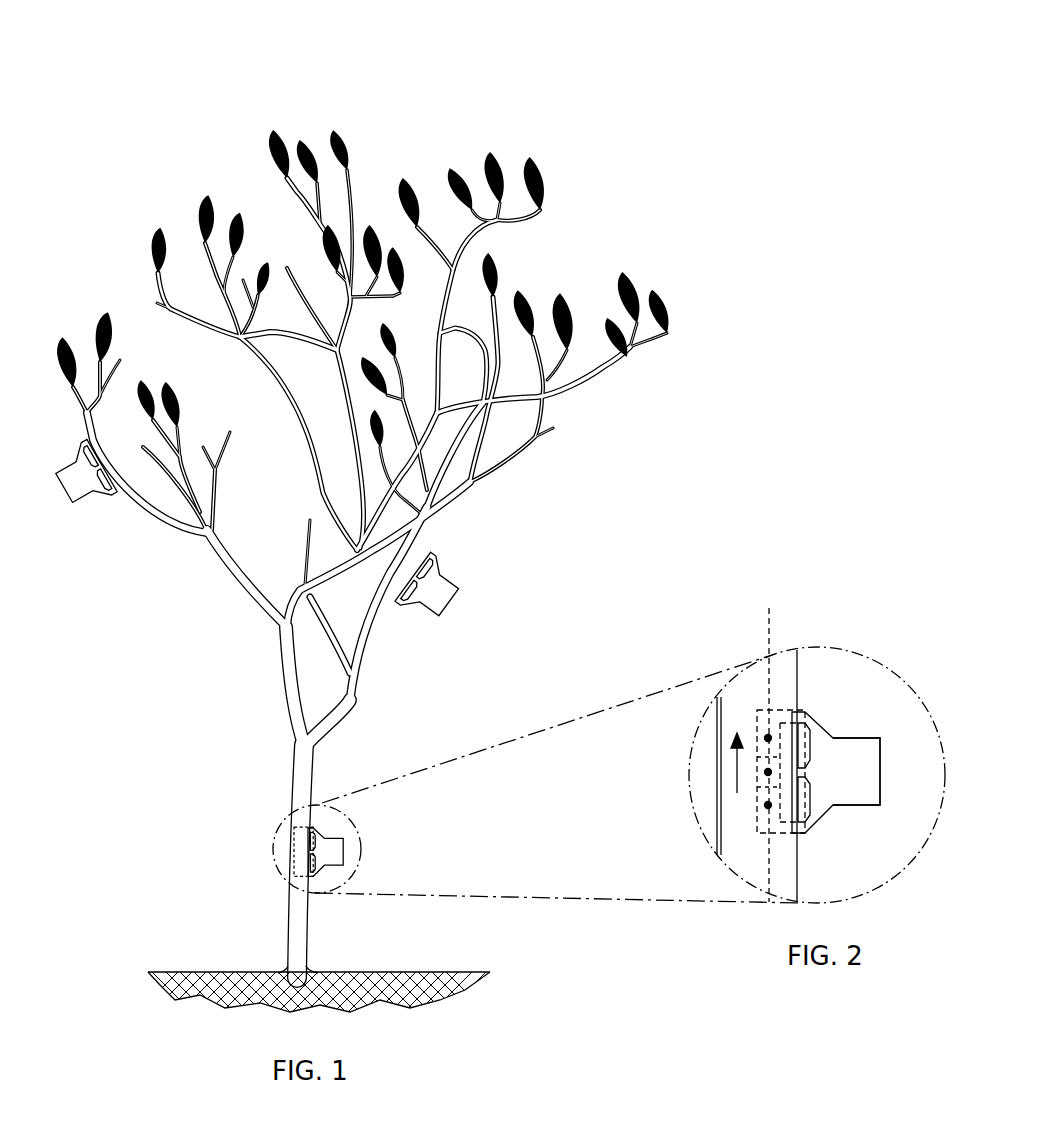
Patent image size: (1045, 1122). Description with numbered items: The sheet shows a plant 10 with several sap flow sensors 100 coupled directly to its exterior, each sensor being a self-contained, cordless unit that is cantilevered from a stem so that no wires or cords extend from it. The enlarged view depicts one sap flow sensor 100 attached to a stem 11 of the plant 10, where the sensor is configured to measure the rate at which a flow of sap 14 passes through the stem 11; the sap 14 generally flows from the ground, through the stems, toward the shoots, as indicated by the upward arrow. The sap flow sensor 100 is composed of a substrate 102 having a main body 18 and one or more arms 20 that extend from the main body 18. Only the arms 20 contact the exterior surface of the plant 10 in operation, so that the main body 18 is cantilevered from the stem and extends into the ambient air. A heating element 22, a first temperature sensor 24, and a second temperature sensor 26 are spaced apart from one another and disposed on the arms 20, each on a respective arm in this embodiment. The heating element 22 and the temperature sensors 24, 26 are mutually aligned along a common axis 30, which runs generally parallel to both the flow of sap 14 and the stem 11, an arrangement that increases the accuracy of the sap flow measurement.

In FIG. 1, the plant 10 is at (168, 106).
In FIG. 1, the sap flow sensor 100 is at (62, 476).
In FIG. 2, the sap flow sensor 100 is at (845, 768).
In FIG. 2, the substrate 102 is at (867, 762).
In FIG. 2, the main body 18 is at (858, 787).
In FIG. 2, the arms 20 is at (792, 767).
In FIG. 2, the heating element 22 is at (766, 774).
In FIG. 2, the first temperature sensor 24 is at (766, 736).
In FIG. 2, the second temperature sensor 26 is at (769, 808).
In FIG. 2, the common axis 30 is at (772, 632).
In FIG. 2, the flow of sap 14 is at (735, 778).
In FIG. 2, the stem 11 is at (717, 802).